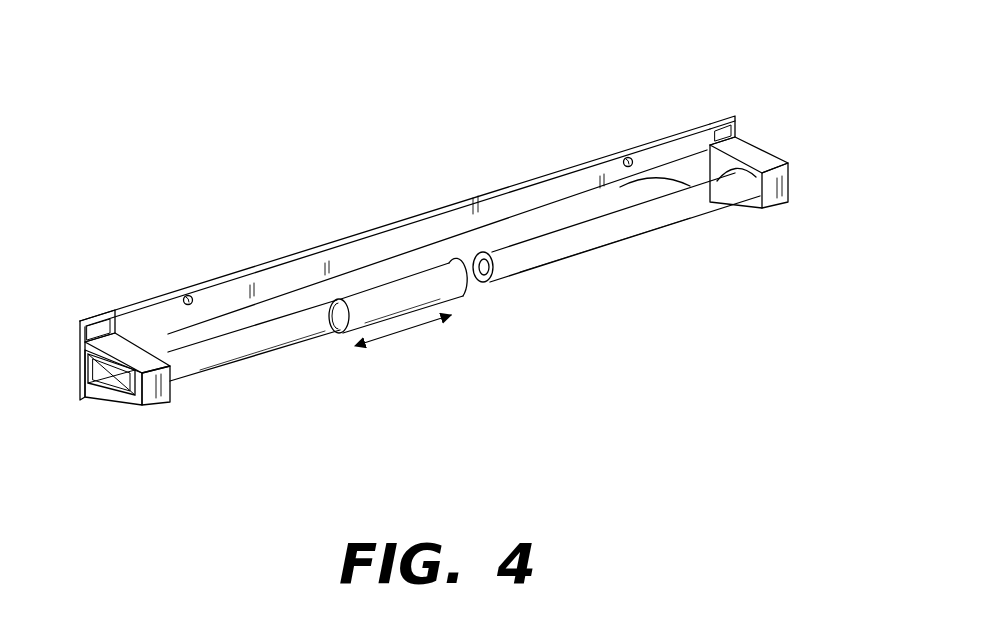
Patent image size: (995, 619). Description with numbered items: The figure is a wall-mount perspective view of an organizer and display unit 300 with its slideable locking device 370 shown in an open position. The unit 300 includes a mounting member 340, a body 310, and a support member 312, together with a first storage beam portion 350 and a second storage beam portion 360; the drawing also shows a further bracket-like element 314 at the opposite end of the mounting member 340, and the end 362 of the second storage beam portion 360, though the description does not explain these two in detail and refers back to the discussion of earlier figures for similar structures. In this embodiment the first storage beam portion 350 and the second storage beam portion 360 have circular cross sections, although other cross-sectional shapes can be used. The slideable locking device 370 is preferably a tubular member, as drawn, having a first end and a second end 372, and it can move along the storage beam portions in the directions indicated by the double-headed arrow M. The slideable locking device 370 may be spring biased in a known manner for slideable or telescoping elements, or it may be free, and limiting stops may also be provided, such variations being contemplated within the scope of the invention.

The organizer and display unit 300 is at (226, 124).
The body 310 is at (740, 110).
The support member 312 is at (747, 128).
The mounting bracket 314 is at (170, 400).
The mounting member 340 is at (417, 228).
The first storage beam portion 350 is at (293, 345).
The second storage beam portion 360 is at (616, 286).
The end of second tube 362 is at (482, 282).
The slideable locking device 370 is at (406, 305).
The second end 372 is at (465, 280).
The double-headed arrow M is at (410, 328).